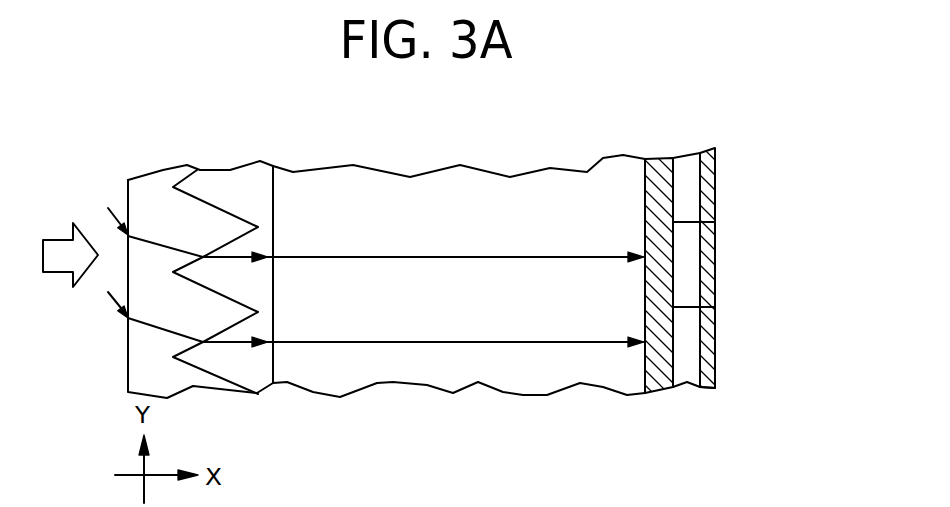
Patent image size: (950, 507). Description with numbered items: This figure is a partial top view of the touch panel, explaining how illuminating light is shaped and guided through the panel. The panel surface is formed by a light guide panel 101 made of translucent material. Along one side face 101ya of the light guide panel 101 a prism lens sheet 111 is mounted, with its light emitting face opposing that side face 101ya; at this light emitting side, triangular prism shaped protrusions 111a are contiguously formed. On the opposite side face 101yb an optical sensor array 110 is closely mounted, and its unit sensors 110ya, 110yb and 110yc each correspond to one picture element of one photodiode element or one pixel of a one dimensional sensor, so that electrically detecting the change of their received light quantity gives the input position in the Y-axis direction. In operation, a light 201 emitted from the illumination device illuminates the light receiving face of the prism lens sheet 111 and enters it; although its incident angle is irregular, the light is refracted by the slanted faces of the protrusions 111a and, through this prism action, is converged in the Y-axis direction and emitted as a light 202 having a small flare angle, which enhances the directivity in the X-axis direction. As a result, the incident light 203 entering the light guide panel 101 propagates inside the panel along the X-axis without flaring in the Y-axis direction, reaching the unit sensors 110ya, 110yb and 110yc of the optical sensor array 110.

The light guide panel 101 is at (476, 168).
The side face 101ya is at (273, 230).
The side face 101yb is at (644, 362).
The optical sensor array 110 is at (662, 170).
The unit sensor 110ya is at (715, 160).
The unit sensor 110yb is at (703, 260).
The unit sensor 110yc is at (703, 350).
The prism lens sheet 111 is at (147, 178).
The protrusions 111a is at (208, 217).
The light 201 is at (55, 272).
The light 202 is at (242, 258).
The incident light 203 is at (490, 257).